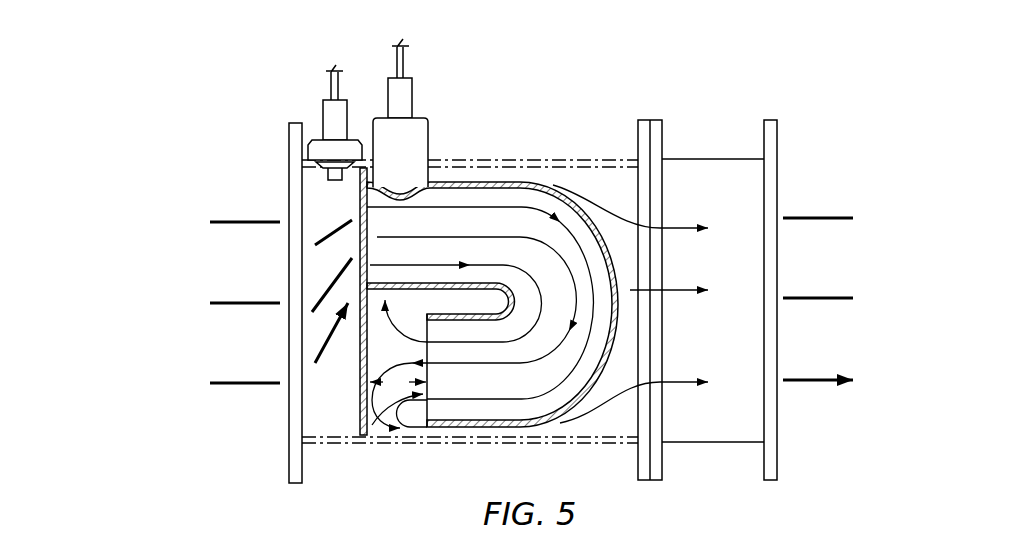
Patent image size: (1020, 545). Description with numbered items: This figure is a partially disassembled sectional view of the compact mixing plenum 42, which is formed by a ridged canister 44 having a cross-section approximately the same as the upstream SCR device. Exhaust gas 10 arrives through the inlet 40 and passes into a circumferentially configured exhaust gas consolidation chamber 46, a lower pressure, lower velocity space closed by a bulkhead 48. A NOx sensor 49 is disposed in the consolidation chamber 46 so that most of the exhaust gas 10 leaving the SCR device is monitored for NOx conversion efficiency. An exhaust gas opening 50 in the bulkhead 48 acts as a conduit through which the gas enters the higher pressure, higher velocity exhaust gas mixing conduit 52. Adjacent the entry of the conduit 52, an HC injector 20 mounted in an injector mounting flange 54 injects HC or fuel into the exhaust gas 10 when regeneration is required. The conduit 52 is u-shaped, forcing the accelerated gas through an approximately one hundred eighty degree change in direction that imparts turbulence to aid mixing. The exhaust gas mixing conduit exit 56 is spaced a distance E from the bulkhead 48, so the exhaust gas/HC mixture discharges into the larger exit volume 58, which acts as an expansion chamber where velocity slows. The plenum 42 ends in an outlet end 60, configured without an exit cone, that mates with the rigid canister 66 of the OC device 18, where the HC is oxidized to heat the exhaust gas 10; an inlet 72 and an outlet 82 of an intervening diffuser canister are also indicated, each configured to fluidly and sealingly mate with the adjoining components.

The exhaust gas 10 is at (247, 382).
The OC device 18 is at (637, 304).
The HC injector 20 is at (413, 97).
The inlet 40 is at (288, 143).
The compact mixing plenum 42 is at (538, 98).
The ridged canister 44 is at (437, 446).
The exhaust gas consolidation chamber 46 is at (332, 291).
The bulkhead 48 is at (360, 392).
The NOx sensor 49 is at (322, 120).
The exhaust gas opening 50 is at (352, 203).
The exhaust gas mixing conduit 52 is at (530, 181).
The injector mounting flange 54 is at (429, 133).
The exhaust gas mixing conduit exit 56 is at (372, 425).
The exit volume 58 is at (500, 303).
The outlet end 60 is at (651, 185).
The rigid canister 66 is at (717, 443).
The inlet 72 is at (645, 410).
The outlet 82 is at (778, 415).